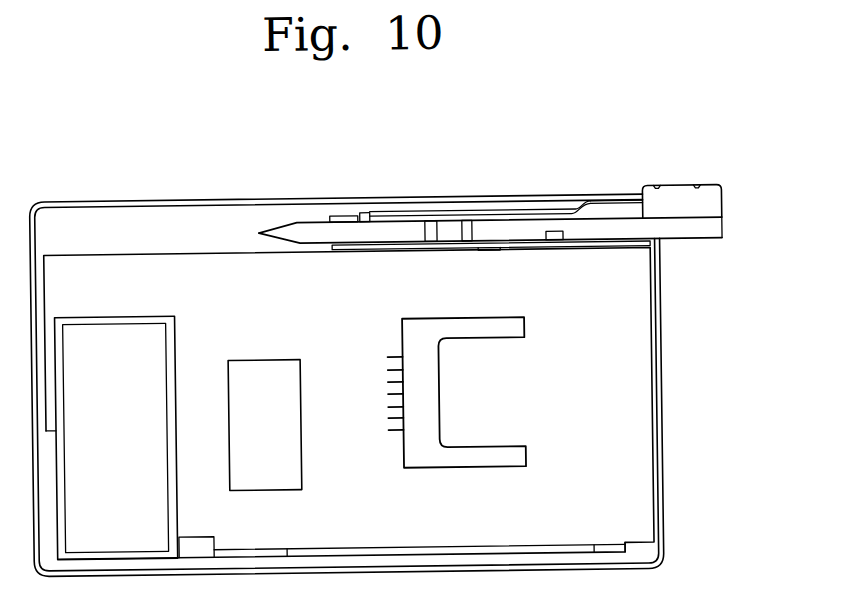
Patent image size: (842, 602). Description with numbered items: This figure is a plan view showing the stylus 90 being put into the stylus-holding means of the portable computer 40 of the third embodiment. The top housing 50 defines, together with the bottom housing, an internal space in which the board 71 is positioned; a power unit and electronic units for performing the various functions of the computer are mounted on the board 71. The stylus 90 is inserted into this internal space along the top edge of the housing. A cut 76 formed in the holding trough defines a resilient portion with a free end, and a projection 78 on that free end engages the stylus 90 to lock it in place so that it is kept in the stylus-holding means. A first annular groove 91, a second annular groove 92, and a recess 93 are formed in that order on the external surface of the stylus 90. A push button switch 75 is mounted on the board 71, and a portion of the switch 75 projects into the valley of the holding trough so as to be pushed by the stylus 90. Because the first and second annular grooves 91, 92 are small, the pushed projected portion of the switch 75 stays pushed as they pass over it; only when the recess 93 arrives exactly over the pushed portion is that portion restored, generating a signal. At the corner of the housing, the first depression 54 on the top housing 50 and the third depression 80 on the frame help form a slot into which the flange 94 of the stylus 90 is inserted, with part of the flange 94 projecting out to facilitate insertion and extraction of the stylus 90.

The portable computer 40 is at (113, 143).
The top housing 50 is at (662, 389).
The first depression 54 is at (598, 197).
The board 71 is at (634, 337).
The push button switch 75 is at (492, 250).
The cut 76 is at (359, 216).
The projection 78 is at (368, 213).
The third depression 80 is at (628, 208).
The stylus 90 is at (697, 233).
The first annular groove 91 is at (434, 222).
The second annular groove 92 is at (469, 222).
The recess 93 is at (559, 234).
The flange 94 is at (676, 194).